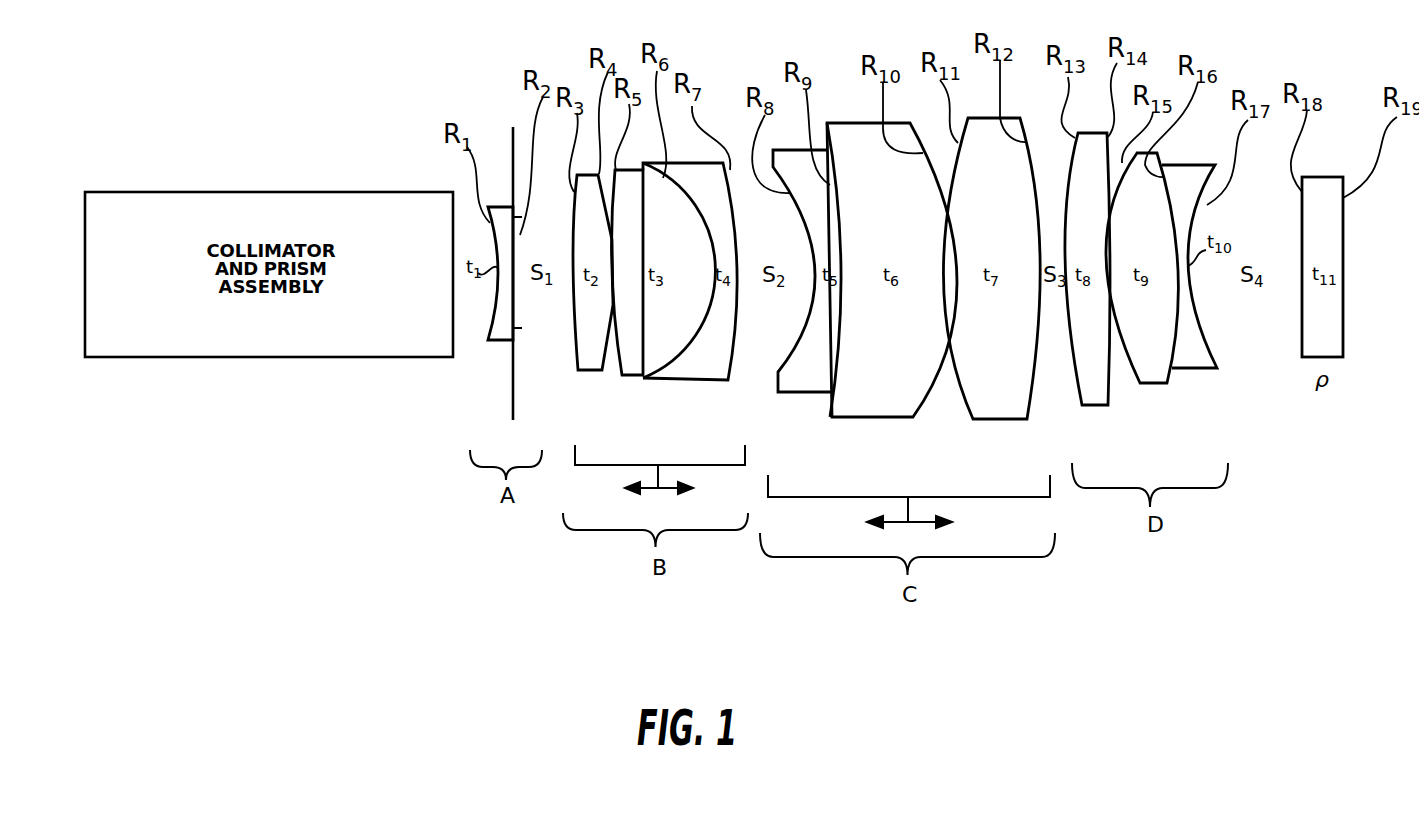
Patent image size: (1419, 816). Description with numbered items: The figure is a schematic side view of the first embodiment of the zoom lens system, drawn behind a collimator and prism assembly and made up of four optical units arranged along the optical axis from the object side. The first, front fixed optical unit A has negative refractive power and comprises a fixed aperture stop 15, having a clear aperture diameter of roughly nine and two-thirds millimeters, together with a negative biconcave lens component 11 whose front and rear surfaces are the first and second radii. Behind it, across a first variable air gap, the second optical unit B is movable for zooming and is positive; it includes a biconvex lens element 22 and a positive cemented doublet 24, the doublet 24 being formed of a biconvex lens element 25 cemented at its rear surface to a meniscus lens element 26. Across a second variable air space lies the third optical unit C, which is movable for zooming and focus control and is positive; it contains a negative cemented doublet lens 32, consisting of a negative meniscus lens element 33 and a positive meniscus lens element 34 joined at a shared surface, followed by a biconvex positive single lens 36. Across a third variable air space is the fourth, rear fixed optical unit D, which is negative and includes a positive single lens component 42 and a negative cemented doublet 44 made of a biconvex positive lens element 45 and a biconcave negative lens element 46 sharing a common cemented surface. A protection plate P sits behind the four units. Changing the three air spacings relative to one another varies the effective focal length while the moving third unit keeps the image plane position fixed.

The negative biconcave lens component 11 is at (497, 318).
The aperture stop 15 is at (513, 367).
The biconvex lens element 22 is at (584, 343).
The positive cemented doublet 24 is at (675, 309).
The biconvex lens element 25 is at (657, 353).
The meniscus lens element 26 is at (690, 271).
The negative cemented doublet lens 32 is at (906, 304).
The meniscus lens negative element 33 is at (822, 386).
The positive meniscus lens element 34 is at (890, 403).
The positive single lens 36 is at (991, 268).
The positive single lens component 42 is at (1098, 407).
The negative cemented doublet 44 is at (1187, 306).
The biconvex positive lens element 45 is at (1162, 352).
The biconcave negative lens element 46 is at (1215, 266).